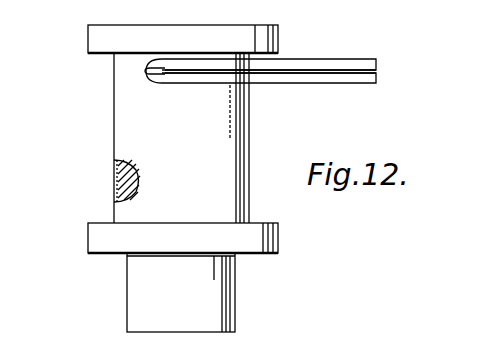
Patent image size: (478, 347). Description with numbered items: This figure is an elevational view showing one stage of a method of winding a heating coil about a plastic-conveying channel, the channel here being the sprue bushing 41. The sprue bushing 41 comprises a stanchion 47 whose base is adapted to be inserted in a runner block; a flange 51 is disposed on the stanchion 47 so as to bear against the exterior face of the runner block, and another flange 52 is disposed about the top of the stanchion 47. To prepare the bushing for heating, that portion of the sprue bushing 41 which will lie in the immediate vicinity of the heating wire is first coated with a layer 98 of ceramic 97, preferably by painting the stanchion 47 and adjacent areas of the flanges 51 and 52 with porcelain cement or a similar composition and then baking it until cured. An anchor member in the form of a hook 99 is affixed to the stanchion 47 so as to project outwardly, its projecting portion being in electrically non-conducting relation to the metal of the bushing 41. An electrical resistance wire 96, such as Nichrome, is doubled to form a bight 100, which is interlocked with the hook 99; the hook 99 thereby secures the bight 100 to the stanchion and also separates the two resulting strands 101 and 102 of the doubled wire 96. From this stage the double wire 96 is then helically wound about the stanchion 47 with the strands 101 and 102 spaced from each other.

The sprue bushing 41 is at (128, 134).
The stanchion 47 is at (236, 148).
The flange 51 is at (95, 238).
The flange 52 is at (98, 39).
The resistance wire 96 is at (305, 63).
The ceramic 97 is at (118, 177).
The layer 98 is at (118, 186).
The hook 99 is at (148, 72).
The bight 100 is at (156, 78).
The strand 101 is at (352, 63).
The strand 102 is at (334, 80).